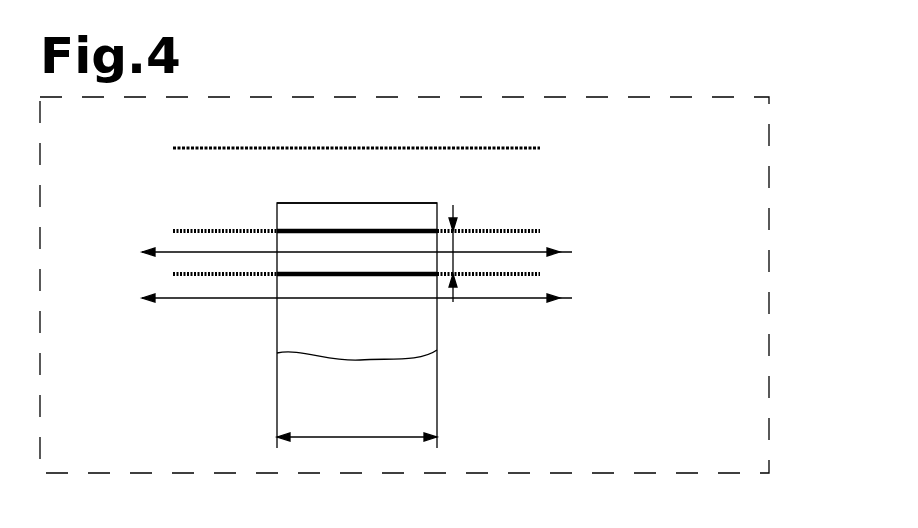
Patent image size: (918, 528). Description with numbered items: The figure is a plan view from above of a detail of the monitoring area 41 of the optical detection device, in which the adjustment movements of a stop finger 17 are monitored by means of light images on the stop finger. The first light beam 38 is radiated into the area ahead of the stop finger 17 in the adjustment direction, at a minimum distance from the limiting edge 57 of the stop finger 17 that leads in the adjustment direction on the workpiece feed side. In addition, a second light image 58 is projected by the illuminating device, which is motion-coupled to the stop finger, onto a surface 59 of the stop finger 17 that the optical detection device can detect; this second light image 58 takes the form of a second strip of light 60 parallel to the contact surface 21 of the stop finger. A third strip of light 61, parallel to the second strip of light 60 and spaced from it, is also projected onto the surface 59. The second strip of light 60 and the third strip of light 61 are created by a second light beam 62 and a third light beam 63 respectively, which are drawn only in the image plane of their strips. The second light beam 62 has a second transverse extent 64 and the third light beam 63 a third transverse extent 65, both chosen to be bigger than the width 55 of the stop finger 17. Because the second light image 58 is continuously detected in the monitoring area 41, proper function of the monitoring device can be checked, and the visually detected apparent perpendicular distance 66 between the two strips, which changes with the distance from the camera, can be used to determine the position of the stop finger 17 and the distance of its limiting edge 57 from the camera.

The stop finger 17 is at (277, 345).
The contact surface 21 is at (466, 188).
The first light beam 38 is at (273, 147).
The monitoring area 41 is at (622, 396).
The width 55 is at (353, 438).
The limiting edge 57 is at (364, 203).
The second light image 58 is at (259, 268).
The surface 59 is at (358, 328).
The second strip of light 60 is at (328, 234).
The third strip of light 61 is at (320, 275).
The second light beam 62 is at (203, 230).
The third light beam 63 is at (252, 276).
The second transverse extent 64 is at (517, 254).
The third transverse extent 65 is at (475, 300).
The apparent perpendicular distance 66 is at (453, 241).